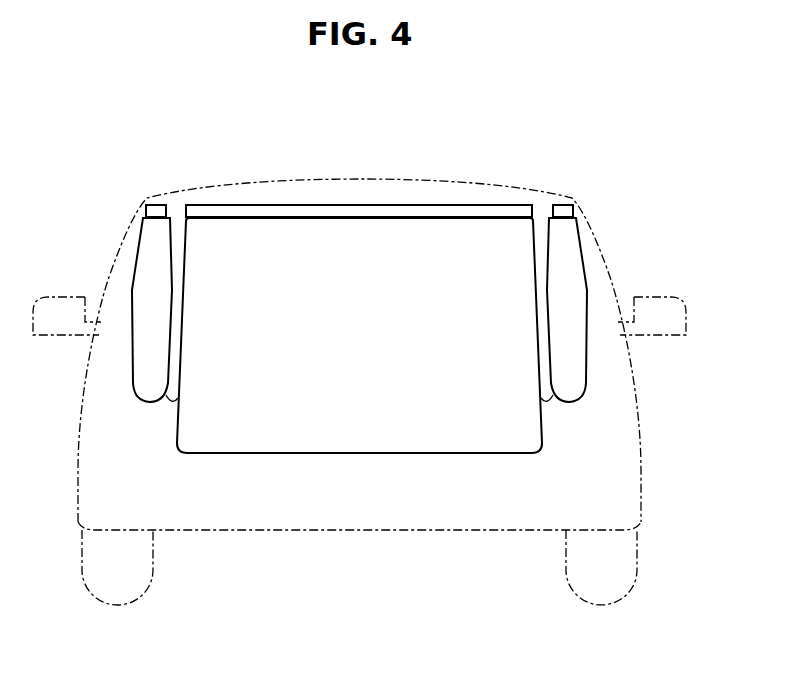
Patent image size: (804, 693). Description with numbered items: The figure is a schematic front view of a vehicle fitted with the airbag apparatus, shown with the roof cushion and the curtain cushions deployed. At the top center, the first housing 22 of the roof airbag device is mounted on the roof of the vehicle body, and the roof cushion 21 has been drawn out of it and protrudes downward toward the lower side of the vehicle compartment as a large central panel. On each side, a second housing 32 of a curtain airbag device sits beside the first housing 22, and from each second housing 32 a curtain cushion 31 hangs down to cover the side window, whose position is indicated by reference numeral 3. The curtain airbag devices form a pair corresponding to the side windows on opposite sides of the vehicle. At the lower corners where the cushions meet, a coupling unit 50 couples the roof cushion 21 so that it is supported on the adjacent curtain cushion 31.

The side window position 3 is at (605, 264).
The roof cushion 21 is at (347, 454).
The first housing 22 is at (362, 205).
The curtain cushion 31 is at (130, 360).
The second housing 32 is at (157, 203).
The coupling unit 50 is at (173, 403).